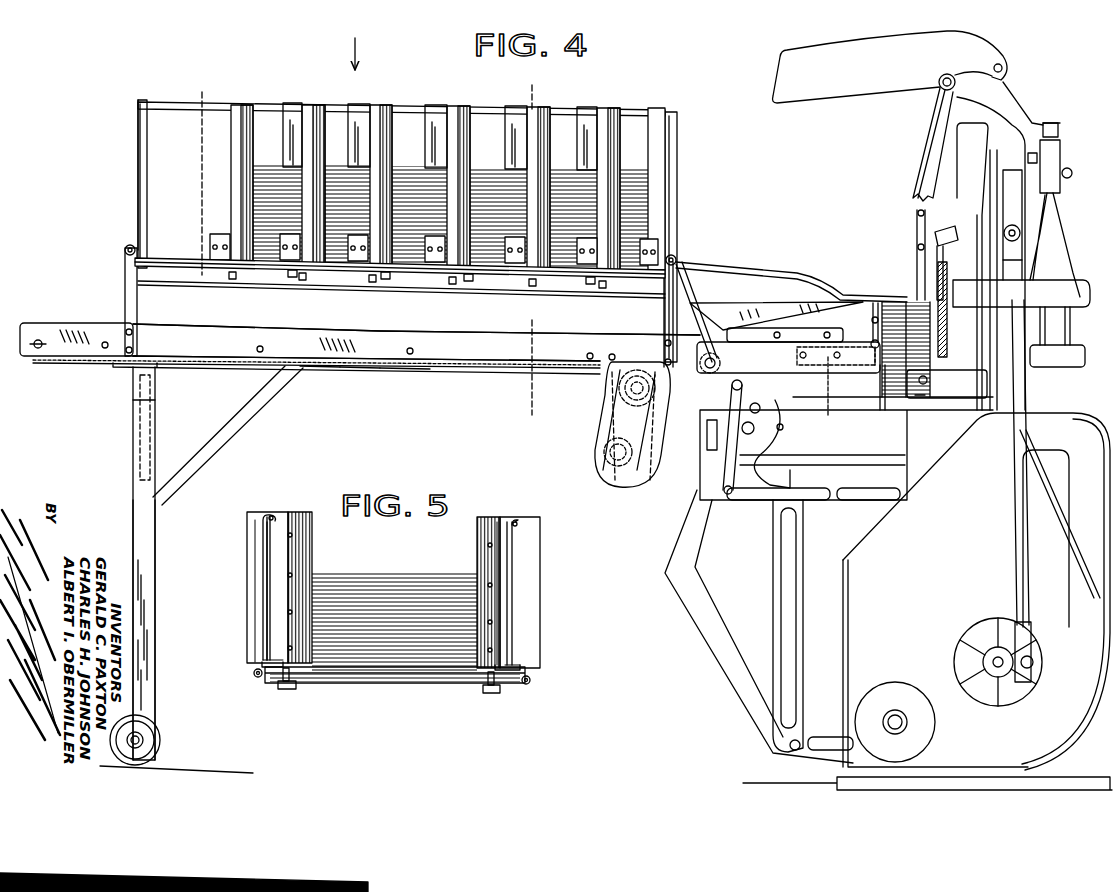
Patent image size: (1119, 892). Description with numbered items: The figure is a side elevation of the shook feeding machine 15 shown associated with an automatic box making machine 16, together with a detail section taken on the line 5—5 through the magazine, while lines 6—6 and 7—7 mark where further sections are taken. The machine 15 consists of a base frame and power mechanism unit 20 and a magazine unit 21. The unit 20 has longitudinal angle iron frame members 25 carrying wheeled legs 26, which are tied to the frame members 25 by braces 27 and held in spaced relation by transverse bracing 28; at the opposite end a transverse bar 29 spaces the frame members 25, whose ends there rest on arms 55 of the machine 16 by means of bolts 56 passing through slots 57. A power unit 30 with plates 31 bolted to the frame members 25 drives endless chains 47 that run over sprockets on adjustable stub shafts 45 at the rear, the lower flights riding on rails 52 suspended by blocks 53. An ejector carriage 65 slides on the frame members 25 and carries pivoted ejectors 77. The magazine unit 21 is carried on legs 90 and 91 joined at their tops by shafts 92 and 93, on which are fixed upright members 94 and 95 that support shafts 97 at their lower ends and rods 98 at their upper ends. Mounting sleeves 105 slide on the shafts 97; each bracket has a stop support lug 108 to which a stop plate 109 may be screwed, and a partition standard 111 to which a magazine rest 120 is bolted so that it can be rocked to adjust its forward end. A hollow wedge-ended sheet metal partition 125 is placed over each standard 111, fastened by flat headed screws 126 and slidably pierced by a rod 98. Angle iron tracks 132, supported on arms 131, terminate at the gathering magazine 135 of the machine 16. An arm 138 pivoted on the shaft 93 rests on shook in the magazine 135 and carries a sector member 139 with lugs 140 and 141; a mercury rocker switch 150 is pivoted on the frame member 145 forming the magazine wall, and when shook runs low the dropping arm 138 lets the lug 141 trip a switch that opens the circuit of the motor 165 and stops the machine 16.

In FIG. 4, the section line 5— 5 is at (200, 96).
In FIG. 4, the section line 6— 6 is at (531, 92).
In FIG. 4, the section line 7— 7 is at (712, 342).
In FIG. 4, the machine 15 is at (357, 42).
In FIG. 4, the box making machine 16 is at (1052, 95).
In FIG. 4, the base frame and power mechanism unit 20 is at (100, 403).
In FIG. 4, the magazine unit 21 is at (125, 197).
In FIG. 4, the longitudinal angle iron frame members 25 is at (220, 340).
In FIG. 4, the wheeled legs 26 is at (147, 552).
In FIG. 4, the braces 27 is at (250, 407).
In FIG. 4, the transverse bracing 28 is at (140, 438).
In FIG. 4, the transverse bar 29 is at (858, 364).
In FIG. 4, the power unit 30 is at (592, 432).
In FIG. 4, the plates 31 is at (604, 388).
In FIG. 4, the stub shafts 45 is at (35, 349).
In FIG. 4, the endless chains 47 is at (410, 381).
In FIG. 4, the rails 52 is at (318, 374).
In FIG. 4, the blocks 53 is at (362, 376).
In FIG. 4, the arms 55 is at (882, 411).
In FIG. 4, the bolts 56 is at (797, 354).
In FIG. 4, the slots 57 is at (822, 406).
In FIG. 4, the ejector carriage 65 is at (750, 326).
In FIG. 4, the ejectors 77 is at (832, 318).
In FIG. 4, the leg 90 is at (125, 302).
In FIG. 4, the leg 91 is at (679, 274).
In FIG. 4, the shaft 92 is at (125, 248).
In FIG. 4, the shaft 93 is at (677, 258).
In FIG. 4, the upright member 94 is at (138, 147).
In FIG. 4, the upright member 95 is at (677, 172).
In FIG. 4, the shafts 97 is at (175, 252).
In FIG. 5, the shafts 97 is at (254, 675).
In FIG. 4, the rods 98 is at (638, 117).
In FIG. 5, the rods 98 is at (272, 516).
In FIG. 4, the mounting sleeves 105 is at (292, 276).
In FIG. 4, the stop support lug 108 is at (213, 239).
In FIG. 5, the stop support lug 108 is at (262, 653).
In FIG. 4, the stop plate 109 is at (293, 118).
In FIG. 5, the stop plate 109 is at (266, 597).
In FIG. 5, the partition standard 111 is at (282, 680).
In FIG. 4, the magazine rest 120 is at (368, 282).
In FIG. 5, the magazine rest 120 is at (288, 690).
In FIG. 4, the partition 125 is at (248, 104).
In FIG. 5, the partition 125 is at (280, 549).
In FIG. 5, the flat headed screws 126 is at (292, 612).
In FIG. 4, the arms 131 is at (876, 305).
In FIG. 4, the angle iron tracks 132 is at (188, 288).
In FIG. 4, the gathering magazine 135 is at (930, 366).
In FIG. 4, the arm 138 is at (767, 276).
In FIG. 4, the sector member 139 is at (917, 222).
In FIG. 4, the lug 140 is at (916, 246).
In FIG. 4, the lug 141 is at (916, 214).
In FIG. 4, the frame member 145 is at (936, 263).
In FIG. 4, the mercury rocker switch 150 is at (944, 230).
In FIG. 4, the motor 165 is at (887, 700).